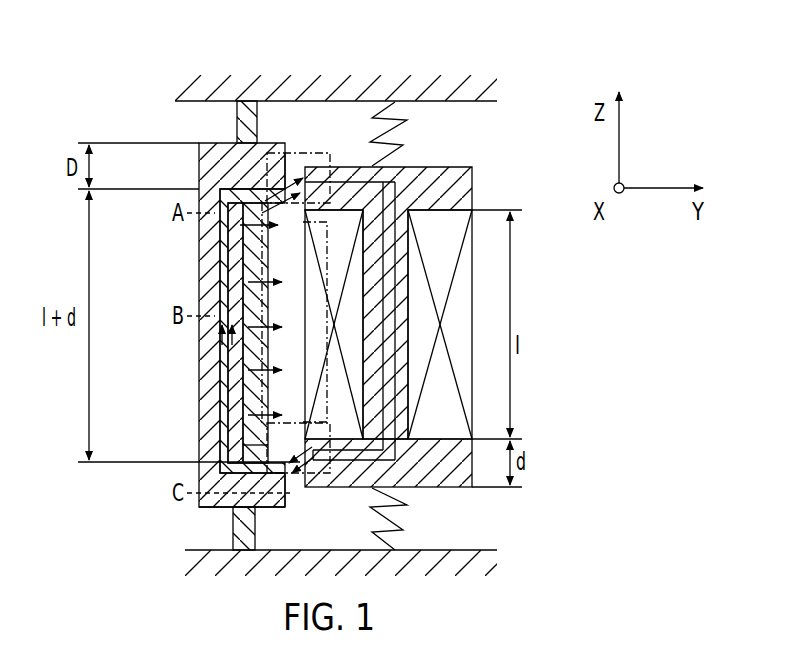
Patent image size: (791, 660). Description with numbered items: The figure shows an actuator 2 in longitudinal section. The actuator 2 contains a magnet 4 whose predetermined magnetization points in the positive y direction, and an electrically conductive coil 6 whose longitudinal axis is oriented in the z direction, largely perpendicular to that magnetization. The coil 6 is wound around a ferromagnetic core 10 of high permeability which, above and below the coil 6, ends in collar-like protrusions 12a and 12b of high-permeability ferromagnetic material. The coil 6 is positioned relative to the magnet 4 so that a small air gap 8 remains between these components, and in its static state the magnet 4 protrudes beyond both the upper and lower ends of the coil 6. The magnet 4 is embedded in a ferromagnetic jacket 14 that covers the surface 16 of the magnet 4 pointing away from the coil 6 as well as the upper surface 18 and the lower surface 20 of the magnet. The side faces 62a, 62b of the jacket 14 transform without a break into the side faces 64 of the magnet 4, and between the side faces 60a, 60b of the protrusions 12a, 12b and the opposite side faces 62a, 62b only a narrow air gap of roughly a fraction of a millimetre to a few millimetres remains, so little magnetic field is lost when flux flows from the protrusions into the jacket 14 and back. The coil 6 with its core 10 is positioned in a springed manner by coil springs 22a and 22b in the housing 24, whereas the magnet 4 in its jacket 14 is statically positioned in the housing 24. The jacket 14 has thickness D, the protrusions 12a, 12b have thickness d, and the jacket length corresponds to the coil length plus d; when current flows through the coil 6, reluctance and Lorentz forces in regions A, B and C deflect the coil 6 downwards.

The actuator 2 is at (150, 73).
The magnet 4 is at (248, 445).
The coil 6 is at (458, 400).
The air gap 8 is at (296, 492).
The core 10 is at (392, 298).
The collar-like protrusion 12a is at (372, 168).
The collar-like protrusion 12b is at (364, 488).
The ferromagnetic jacket 14 is at (216, 505).
The surface of the magnet pointing away from the coil 16 is at (243, 400).
The upper surface of the magnet 18 is at (236, 166).
The lower surface of the magnet 20 is at (236, 521).
The coil spring 22a is at (398, 126).
The coil spring 22b is at (405, 516).
The housing 24 is at (470, 93).
The side face of the collar-like protrusion 60a is at (303, 172).
The side face of the collar-like protrusion 60b is at (305, 478).
The side face of the jacket 62a is at (289, 163).
The side face of the jacket 62b is at (290, 495).
The side faces of the magnet 64 is at (230, 372).